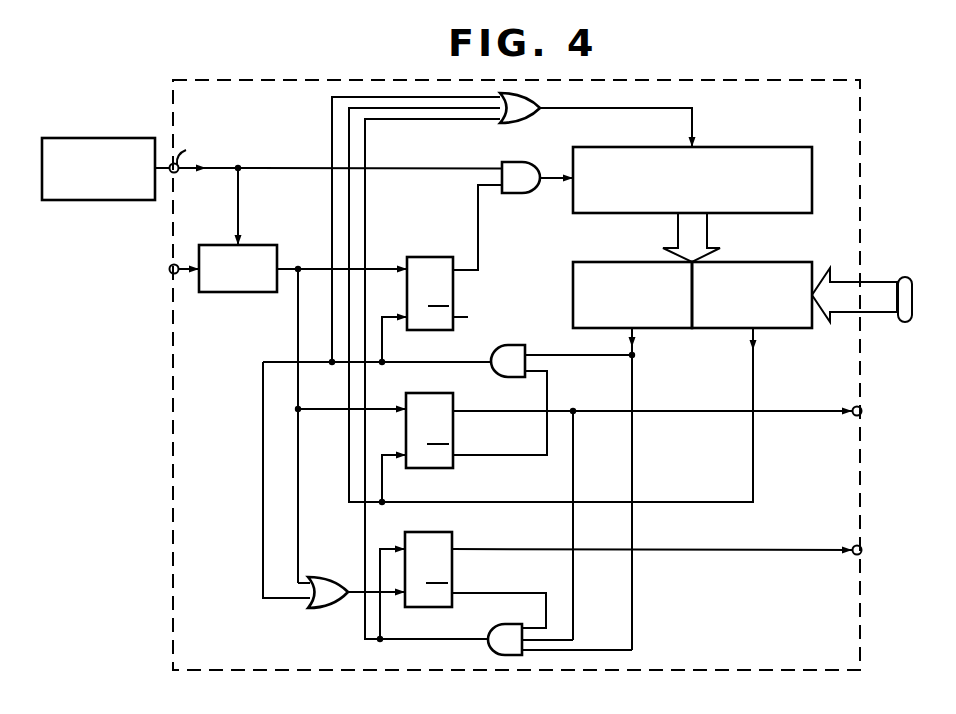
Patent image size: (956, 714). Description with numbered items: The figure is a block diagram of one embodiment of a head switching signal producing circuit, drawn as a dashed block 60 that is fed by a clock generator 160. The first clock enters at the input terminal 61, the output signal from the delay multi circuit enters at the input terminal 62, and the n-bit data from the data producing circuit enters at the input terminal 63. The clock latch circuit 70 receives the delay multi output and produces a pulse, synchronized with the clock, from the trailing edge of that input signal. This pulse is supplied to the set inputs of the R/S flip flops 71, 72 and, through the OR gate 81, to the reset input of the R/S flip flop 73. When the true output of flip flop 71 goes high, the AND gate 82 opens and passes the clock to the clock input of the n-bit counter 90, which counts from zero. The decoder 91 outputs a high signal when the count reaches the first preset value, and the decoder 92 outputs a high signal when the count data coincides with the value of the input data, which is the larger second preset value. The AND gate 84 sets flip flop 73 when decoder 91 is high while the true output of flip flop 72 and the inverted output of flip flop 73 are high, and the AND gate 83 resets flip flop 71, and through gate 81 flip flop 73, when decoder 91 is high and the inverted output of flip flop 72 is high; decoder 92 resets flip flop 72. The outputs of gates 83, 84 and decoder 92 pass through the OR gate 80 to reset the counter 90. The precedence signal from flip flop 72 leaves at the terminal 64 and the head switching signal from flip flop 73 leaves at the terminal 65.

The control circuit 60 is at (314, 79).
The clock generator 160 is at (99, 136).
The input terminal of clock CP1 61 is at (178, 172).
The input terminal of output A1 62 is at (176, 274).
The input terminal of n-bit data D1 63 is at (906, 276).
The terminal 64 is at (860, 406).
The terminal 65 is at (860, 545).
The clock latch circuit 70 is at (262, 292).
The R/S flip flop 71 is at (430, 330).
The R/S flip flop 72 is at (440, 468).
The R/S flip flop 73 is at (435, 607).
The OR gate 80 is at (514, 122).
The OR gate 81 is at (330, 608).
The AND gate 82 is at (514, 193).
The AND gate 83 is at (513, 377).
The AND gate 84 is at (487, 650).
The n-bit counter 90 is at (812, 178).
The decoder 91 is at (676, 328).
The decoder 92 is at (786, 328).